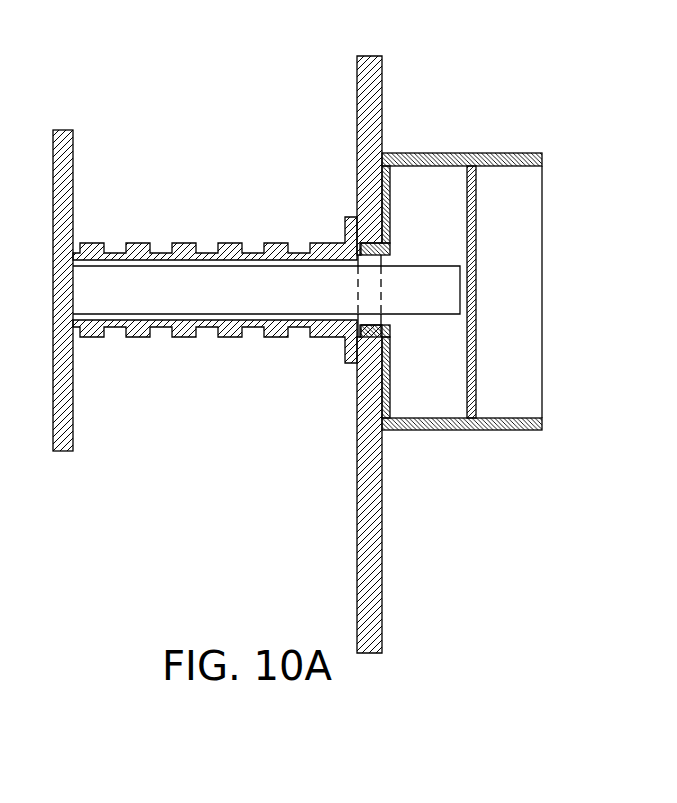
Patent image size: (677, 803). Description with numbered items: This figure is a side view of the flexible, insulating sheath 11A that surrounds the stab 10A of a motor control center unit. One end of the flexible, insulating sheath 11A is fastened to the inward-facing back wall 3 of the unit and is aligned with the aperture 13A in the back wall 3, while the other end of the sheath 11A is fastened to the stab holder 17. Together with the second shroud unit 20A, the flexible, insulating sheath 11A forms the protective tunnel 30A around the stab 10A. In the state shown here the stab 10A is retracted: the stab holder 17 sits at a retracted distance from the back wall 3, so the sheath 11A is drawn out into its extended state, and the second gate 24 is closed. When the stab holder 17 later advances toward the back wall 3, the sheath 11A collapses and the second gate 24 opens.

The back wall 3 is at (382, 78).
The stab holder 17 is at (73, 147).
The flexible, insulating sheath 11A is at (221, 340).
The stab 10A is at (426, 236).
The aperture 13A is at (390, 323).
The protective tunnel 30A is at (400, 447).
The second shroud unit 20A is at (527, 153).
The second gate 24 is at (476, 361).